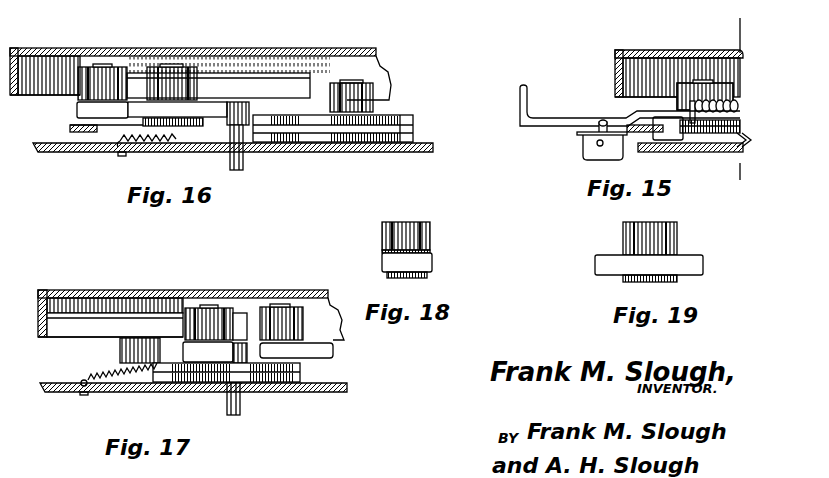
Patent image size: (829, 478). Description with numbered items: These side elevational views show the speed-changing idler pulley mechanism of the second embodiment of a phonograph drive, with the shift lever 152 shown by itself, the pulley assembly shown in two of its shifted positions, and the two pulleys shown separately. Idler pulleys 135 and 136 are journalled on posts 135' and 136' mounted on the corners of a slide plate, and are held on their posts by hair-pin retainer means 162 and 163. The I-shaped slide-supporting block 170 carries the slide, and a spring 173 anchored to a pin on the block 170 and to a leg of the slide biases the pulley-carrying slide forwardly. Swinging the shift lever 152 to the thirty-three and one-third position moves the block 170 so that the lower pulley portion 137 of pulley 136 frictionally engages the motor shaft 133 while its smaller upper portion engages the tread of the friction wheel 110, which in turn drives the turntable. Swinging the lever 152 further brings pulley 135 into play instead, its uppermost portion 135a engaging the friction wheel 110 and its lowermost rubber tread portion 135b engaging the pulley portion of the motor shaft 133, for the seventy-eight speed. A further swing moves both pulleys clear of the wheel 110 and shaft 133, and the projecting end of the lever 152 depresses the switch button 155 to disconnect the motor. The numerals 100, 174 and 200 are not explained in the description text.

In FIG. 16, the rack plate assembly 100 is at (390, 110).
In FIG. 16, the friction wheel 110 is at (223, 70).
In FIG. 17, the friction wheel 110 is at (130, 310).
In FIG. 16, the motor shaft 133 is at (217, 133).
In FIG. 17, the motor shaft 133 is at (240, 367).
In FIG. 18, the idler pulley 135 is at (409, 250).
In FIG. 18, the uppermost portion 135a is at (433, 233).
In FIG. 18, the rubber tread portion 135b is at (425, 267).
In FIG. 16, the post 135' is at (99, 59).
In FIG. 17, the post 135' is at (209, 300).
In FIG. 17, the idler pulley 136 is at (299, 323).
In FIG. 19, the idler pulley 136 is at (675, 238).
In FIG. 16, the post 136' is at (172, 61).
In FIG. 17, the post 136' is at (275, 284).
In FIG. 19, the pulley portion 137 is at (693, 255).
In FIG. 15, the shift lever 152 is at (552, 113).
In FIG. 15, the switch button 155 is at (580, 125).
In FIG. 16, the hair-pin retainer means 162 is at (88, 64).
In FIG. 17, the hair-pin retainer means 162 is at (192, 306).
In FIG. 16, the hair-pin retainer means 163 is at (155, 64).
In FIG. 15, the slide-supporting block 170 is at (680, 135).
In FIG. 15, the spring 173 is at (733, 98).
In FIG. 15, the pin 174 is at (697, 100).
In FIG. 15, the bracket 200 is at (590, 147).